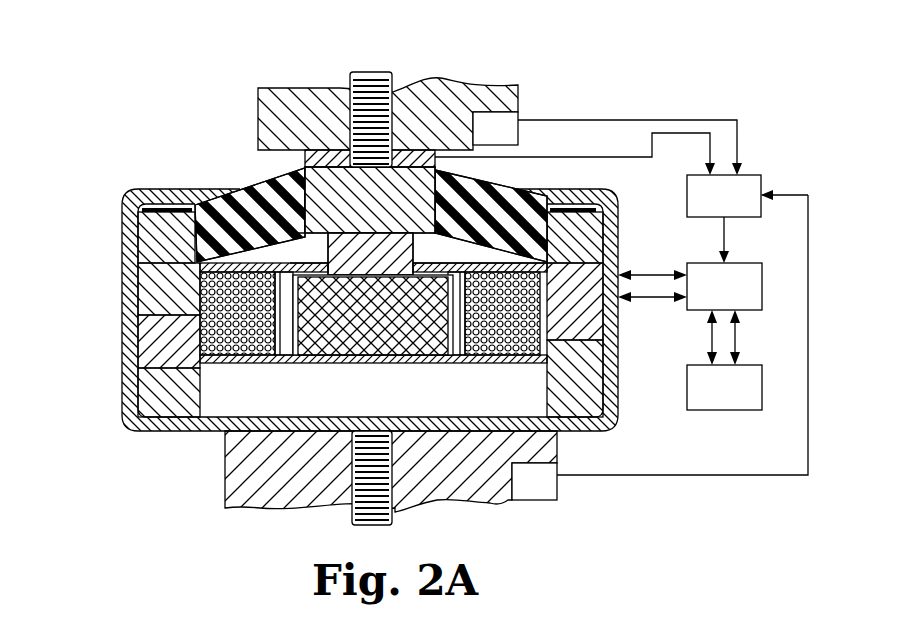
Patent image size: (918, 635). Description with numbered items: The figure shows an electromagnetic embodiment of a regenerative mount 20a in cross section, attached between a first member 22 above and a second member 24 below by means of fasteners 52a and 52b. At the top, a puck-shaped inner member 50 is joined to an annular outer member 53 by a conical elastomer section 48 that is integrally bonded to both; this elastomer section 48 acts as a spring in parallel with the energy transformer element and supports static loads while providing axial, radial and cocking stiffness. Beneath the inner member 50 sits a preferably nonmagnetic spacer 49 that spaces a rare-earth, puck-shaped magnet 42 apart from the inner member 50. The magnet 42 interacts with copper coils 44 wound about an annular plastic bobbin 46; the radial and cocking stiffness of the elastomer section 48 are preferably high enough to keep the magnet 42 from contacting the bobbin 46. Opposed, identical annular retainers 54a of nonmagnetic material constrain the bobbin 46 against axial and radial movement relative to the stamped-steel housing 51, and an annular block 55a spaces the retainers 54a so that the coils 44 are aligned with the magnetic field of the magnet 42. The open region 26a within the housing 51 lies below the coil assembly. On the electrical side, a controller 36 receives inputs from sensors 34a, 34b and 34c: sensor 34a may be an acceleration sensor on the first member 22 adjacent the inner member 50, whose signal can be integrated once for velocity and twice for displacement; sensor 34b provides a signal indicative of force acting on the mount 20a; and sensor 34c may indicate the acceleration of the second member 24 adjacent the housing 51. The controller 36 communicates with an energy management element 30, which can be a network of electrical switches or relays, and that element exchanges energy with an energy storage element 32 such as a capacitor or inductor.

The regenerative mount 20a is at (197, 98).
The first member 22 is at (443, 134).
The second member 24 is at (459, 474).
The air gap 26a is at (416, 372).
The energy management element 30 is at (738, 297).
The energy storage element 32 is at (738, 399).
The sensor 34a is at (514, 140).
The sensor 34b is at (303, 157).
The sensor 34c is at (553, 493).
The controller 36 is at (738, 208).
The magnet 42 is at (385, 328).
The coils 44 is at (252, 357).
The bobbin 46 is at (287, 350).
The elastomer section 48 is at (258, 232).
The spacer 49 is at (384, 266).
The inner member 50 is at (385, 213).
The housing 51 is at (122, 372).
The fastener 52a is at (375, 72).
The fastener 52b is at (395, 521).
The outer member 53 is at (122, 248).
The retainers 54a is at (122, 288).
The block 55a is at (150, 432).